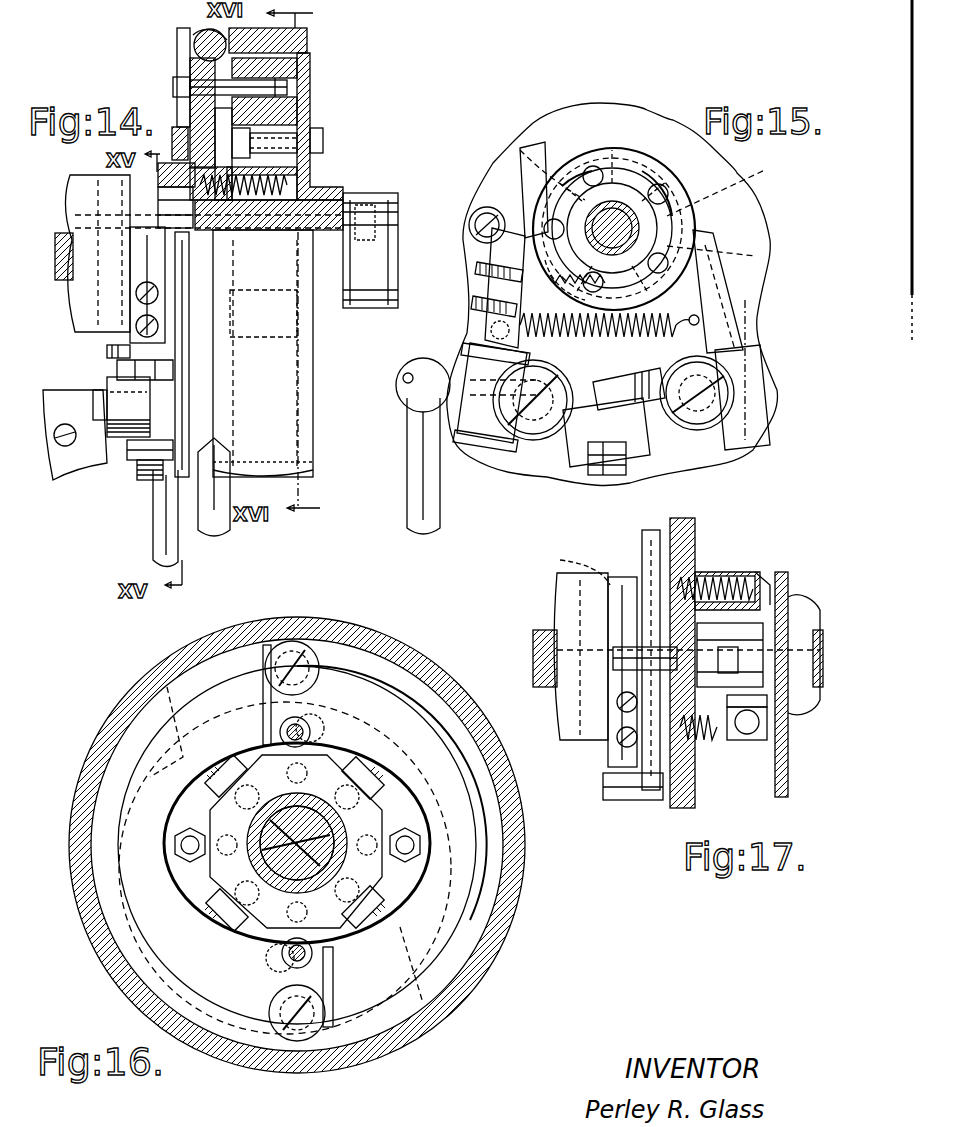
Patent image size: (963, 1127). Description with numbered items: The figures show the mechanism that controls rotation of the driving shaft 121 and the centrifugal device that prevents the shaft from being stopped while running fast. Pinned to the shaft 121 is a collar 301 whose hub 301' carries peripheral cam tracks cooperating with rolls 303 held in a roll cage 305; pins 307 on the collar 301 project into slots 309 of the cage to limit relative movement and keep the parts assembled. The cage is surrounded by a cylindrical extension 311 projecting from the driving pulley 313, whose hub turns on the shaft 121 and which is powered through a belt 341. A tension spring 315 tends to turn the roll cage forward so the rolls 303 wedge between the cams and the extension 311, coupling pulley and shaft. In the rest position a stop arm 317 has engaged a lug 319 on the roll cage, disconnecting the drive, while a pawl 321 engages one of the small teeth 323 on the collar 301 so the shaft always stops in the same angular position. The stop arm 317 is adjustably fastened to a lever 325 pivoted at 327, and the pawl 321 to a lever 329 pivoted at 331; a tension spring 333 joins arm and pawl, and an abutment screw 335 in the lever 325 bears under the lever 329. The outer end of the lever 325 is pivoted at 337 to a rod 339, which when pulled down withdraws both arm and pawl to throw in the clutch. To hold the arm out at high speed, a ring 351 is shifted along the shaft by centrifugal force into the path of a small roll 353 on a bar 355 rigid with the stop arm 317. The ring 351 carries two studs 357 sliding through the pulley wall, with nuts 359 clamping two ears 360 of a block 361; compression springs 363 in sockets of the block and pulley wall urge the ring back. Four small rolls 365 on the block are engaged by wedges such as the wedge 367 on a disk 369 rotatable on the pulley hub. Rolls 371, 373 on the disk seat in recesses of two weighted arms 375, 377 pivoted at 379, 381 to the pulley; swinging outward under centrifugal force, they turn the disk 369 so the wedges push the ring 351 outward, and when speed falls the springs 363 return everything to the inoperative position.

In FIG. 14, the shaft 121 is at (62, 262).
In FIG. 15, the shaft 121 is at (630, 238).
In FIG. 16, the shaft 121 is at (300, 820).
In FIG. 17, the shaft 121 is at (545, 665).
In FIG. 14, the collar 301 is at (66, 253).
In FIG. 17, the collar 301 is at (554, 656).
In FIG. 15, the hub 301' is at (668, 225).
In FIG. 15, the rolls 303 is at (594, 166).
In FIG. 14, the roll cage 305 is at (158, 175).
In FIG. 15, the roll cage 305 is at (628, 165).
In FIG. 17, the roll cage 305 is at (574, 563).
In FIG. 15, the pins 307 is at (655, 150).
In FIG. 15, the slots 309 is at (668, 200).
In FIG. 14, the cylindrical extension 311 is at (165, 185).
In FIG. 17, the cylindrical extension 311 is at (665, 540).
In FIG. 14, the driving pulley 313 is at (300, 48).
In FIG. 16, the driving pulley 313 is at (428, 662).
In FIG. 17, the driving pulley 313 is at (695, 535).
In FIG. 15, the tension spring 315 is at (560, 282).
In FIG. 15, the stop arm 317 is at (490, 270).
In FIG. 17, the stop arm 317 is at (620, 765).
In FIG. 15, the lug 319 is at (532, 150).
In FIG. 15, the pawl 321 is at (740, 300).
In FIG. 15, the teeth 323 is at (740, 190).
In FIG. 15, the lever 325 is at (462, 348).
In FIG. 15, the pivot 327 is at (538, 425).
In FIG. 15, the lever 329 is at (640, 408).
In FIG. 15, the pivot 331 is at (706, 438).
In FIG. 14, the tension spring 333 is at (106, 352).
In FIG. 15, the tension spring 333 is at (597, 338).
In FIG. 15, the abutment screw 335 is at (600, 475).
In FIG. 15, the pivot 337 is at (415, 384).
In FIG. 14, the rod 339 is at (158, 496).
In FIG. 15, the rod 339 is at (430, 505).
In FIG. 14, the belt 341 is at (222, 524).
In FIG. 14, the ring 351 is at (180, 130).
In FIG. 15, the ring 351 is at (510, 160).
In FIG. 17, the ring 351 is at (648, 552).
In FIG. 14, the roll 353 is at (140, 293).
In FIG. 15, the roll 353 is at (482, 207).
In FIG. 17, the roll 353 is at (640, 675).
In FIG. 14, the bar 355 is at (137, 326).
In FIG. 15, the bar 355 is at (490, 302).
In FIG. 17, the bar 355 is at (616, 742).
In FIG. 16, the studs 357 is at (190, 862).
In FIG. 17, the studs 357 is at (655, 658).
In FIG. 16, the nuts 359 is at (195, 838).
In FIG. 17, the nuts 359 is at (740, 647).
In FIG. 16, the ears 360 is at (428, 765).
In FIG. 17, the ears 360 is at (770, 700).
In FIG. 16, the block 361 is at (352, 825).
In FIG. 17, the block 361 is at (760, 575).
In FIG. 17, the compression springs 363 is at (725, 578).
In FIG. 16, the rolls 365 is at (228, 770).
In FIG. 17, the rolls 365 is at (747, 742).
In FIG. 14, the wedge 367 is at (296, 345).
In FIG. 17, the wedge 367 is at (785, 735).
In FIG. 14, the disk 369 is at (302, 192).
In FIG. 16, the disk 369 is at (238, 818).
In FIG. 17, the disk 369 is at (787, 585).
In FIG. 14, the roll 371 is at (285, 143).
In FIG. 16, the roll 371 is at (282, 725).
In FIG. 16, the roll 373 is at (318, 965).
In FIG. 14, the weighted arm 375 is at (272, 112).
In FIG. 16, the weighted arm 375 is at (360, 665).
In FIG. 16, the weighted arm 377 is at (238, 678).
In FIG. 14, the pivot 379 is at (275, 88).
In FIG. 16, the pivot 379 is at (291, 655).
In FIG. 16, the pivot 381 is at (305, 1040).